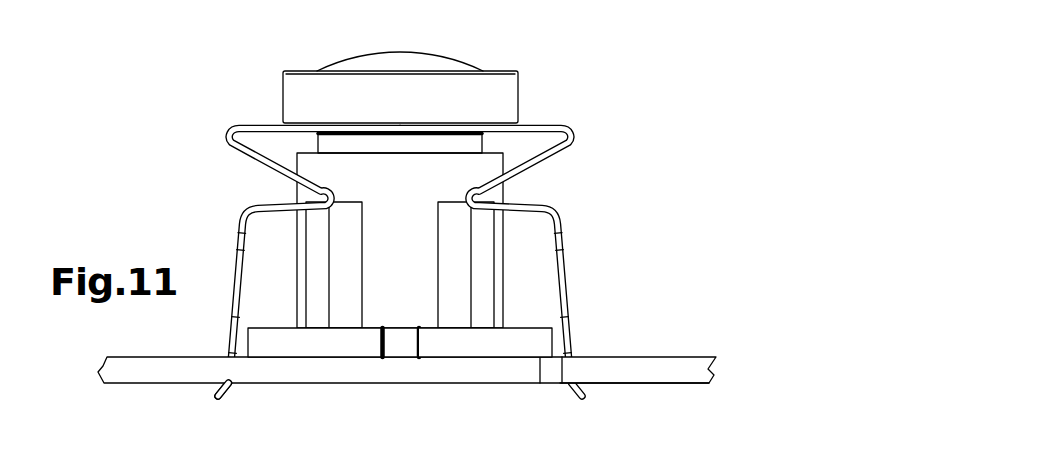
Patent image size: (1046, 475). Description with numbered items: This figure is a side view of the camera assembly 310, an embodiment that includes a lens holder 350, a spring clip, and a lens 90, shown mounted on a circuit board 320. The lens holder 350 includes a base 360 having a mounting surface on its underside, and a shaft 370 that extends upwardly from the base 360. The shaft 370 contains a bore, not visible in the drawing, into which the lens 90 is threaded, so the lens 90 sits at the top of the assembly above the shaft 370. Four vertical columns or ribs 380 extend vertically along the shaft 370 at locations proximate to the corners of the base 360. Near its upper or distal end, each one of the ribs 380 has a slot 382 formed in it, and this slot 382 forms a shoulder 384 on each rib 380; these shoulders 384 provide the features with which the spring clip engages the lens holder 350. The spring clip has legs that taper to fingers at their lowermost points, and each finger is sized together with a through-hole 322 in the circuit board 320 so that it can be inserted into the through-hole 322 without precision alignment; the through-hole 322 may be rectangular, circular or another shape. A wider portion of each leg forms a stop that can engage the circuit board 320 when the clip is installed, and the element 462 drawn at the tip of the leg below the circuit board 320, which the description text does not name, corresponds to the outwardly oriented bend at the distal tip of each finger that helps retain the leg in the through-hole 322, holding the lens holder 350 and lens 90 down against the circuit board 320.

The lens 90 is at (453, 58).
The camera assembly 310 is at (718, 114).
The circuit board 320 is at (680, 356).
The through-hole 322 is at (600, 388).
The lens holder 350 is at (400, 299).
The base 360 is at (272, 345).
The shaft 370 is at (468, 396).
The ribs 380 is at (529, 395).
The slot 382 is at (495, 263).
The shoulder 384 is at (497, 216).
The clip leg tip 462 is at (260, 384).